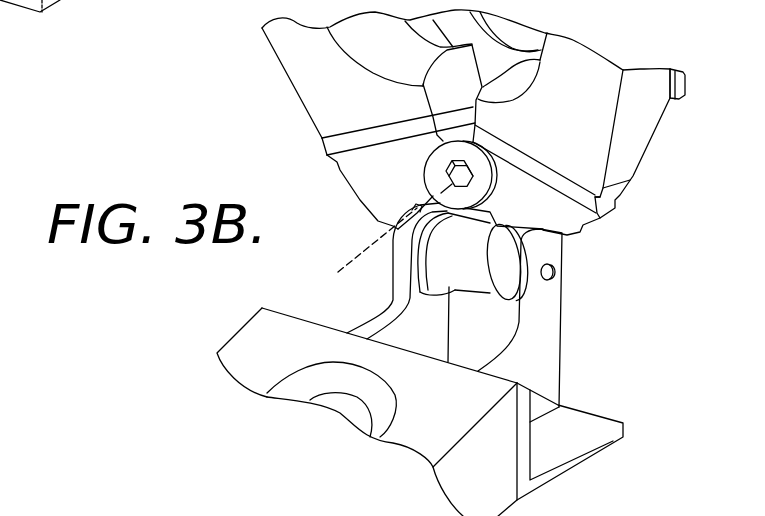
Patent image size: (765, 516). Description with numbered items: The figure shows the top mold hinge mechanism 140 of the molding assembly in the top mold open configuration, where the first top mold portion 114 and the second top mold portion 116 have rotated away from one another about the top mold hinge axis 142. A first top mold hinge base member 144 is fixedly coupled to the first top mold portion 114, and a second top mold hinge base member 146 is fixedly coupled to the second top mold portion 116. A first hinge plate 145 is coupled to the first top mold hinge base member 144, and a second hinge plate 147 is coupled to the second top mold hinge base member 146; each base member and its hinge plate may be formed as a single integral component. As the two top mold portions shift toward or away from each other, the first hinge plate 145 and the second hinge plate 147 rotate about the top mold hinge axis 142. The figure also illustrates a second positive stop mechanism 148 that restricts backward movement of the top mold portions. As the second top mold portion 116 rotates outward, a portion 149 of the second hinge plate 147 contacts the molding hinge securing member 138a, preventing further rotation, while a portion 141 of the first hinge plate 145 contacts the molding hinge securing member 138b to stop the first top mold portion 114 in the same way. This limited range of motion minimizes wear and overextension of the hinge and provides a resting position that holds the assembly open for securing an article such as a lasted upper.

The first top mold portion 114 is at (278, 40).
The second top mold portion 116 is at (647, 108).
The molding hinge securing member 138a is at (550, 380).
The molding hinge securing member 138b is at (383, 313).
The top mold hinge mechanism 140 is at (666, 237).
The portion of the first hinge plate 141 is at (382, 203).
The top mold hinge axis 142 is at (345, 266).
The first top mold hinge base member 144 is at (322, 146).
The first hinge plate 145 is at (342, 170).
The second top mold hinge base member 146 is at (620, 195).
The second hinge plate 147 is at (578, 227).
The second positive stop mechanism 148 is at (585, 298).
The portion of the second hinge plate 149 is at (568, 246).